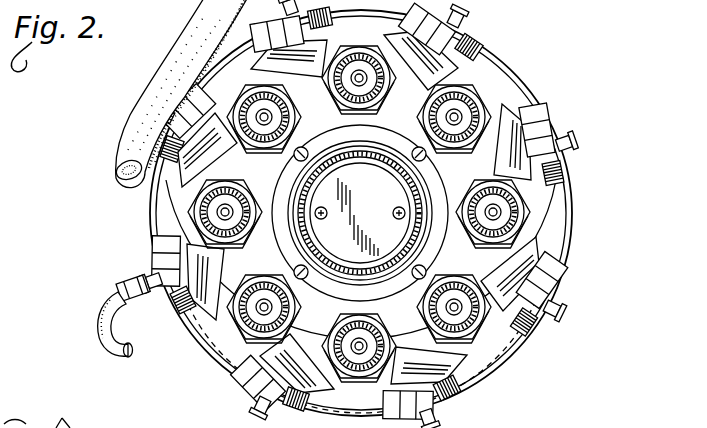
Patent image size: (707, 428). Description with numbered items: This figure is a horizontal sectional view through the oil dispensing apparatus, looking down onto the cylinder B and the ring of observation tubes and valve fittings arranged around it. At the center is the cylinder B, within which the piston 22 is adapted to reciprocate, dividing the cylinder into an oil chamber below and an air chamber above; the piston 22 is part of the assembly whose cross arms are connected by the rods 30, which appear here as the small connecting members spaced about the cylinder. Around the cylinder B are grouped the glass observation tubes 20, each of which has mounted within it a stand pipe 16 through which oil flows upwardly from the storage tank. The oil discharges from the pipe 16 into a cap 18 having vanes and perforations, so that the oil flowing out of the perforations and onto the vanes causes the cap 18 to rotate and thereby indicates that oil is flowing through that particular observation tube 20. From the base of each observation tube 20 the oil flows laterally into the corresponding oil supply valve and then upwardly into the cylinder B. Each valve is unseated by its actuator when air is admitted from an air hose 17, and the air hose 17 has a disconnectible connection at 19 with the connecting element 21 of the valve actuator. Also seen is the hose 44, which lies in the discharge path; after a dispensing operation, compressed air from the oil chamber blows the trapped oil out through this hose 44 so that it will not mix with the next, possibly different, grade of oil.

The pipe 16 is at (361, 76).
The air hose 17 is at (105, 331).
The cap 18 is at (217, 212).
The disconnectible connection 19 is at (122, 293).
The glass observation tube 20 is at (230, 222).
The connecting element 21 is at (573, 141).
The piston 22 is at (360, 213).
The rods 30 is at (296, 162).
The hose 44 is at (162, 63).
The cylinder B is at (408, 182).